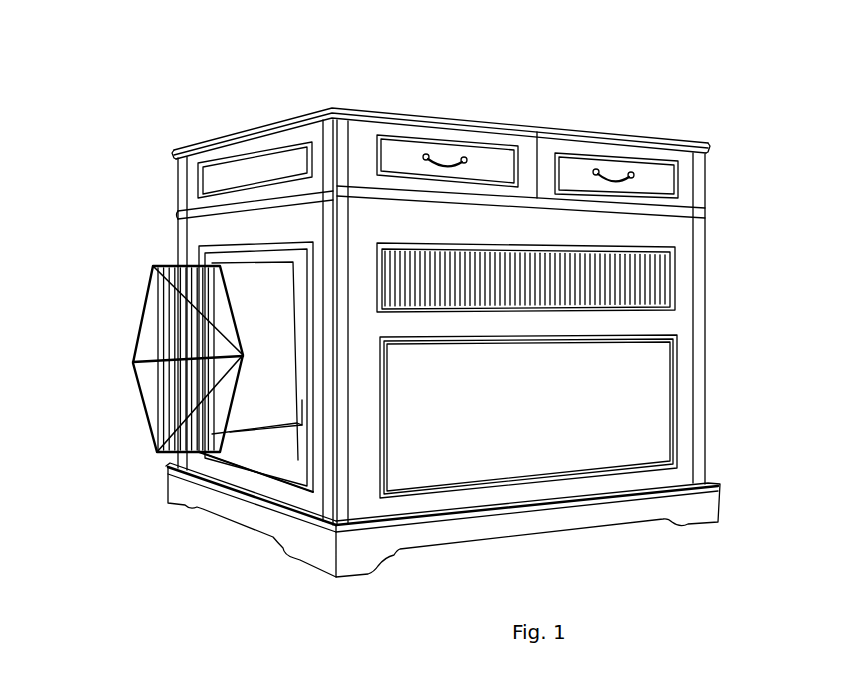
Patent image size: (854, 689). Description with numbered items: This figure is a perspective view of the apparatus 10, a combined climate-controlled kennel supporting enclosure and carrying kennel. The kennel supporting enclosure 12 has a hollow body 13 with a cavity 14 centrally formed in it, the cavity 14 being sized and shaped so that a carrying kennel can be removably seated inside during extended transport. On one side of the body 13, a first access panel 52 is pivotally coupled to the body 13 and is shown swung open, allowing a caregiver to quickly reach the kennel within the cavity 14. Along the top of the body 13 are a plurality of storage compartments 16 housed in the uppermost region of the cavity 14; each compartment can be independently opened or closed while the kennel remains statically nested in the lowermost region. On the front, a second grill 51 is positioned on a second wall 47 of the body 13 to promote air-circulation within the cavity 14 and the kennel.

The combined climate-controlled kennel supporting enclosure and carrying kennel 10 is at (213, 111).
The kennel supporting enclosure 12 is at (180, 168).
The hollow body 13 is at (343, 127).
The cavity 14 is at (256, 367).
The storage compartments 16 is at (483, 162).
The second wall 47 is at (684, 414).
The second grill 51 is at (652, 281).
The first access panel 52 is at (153, 347).